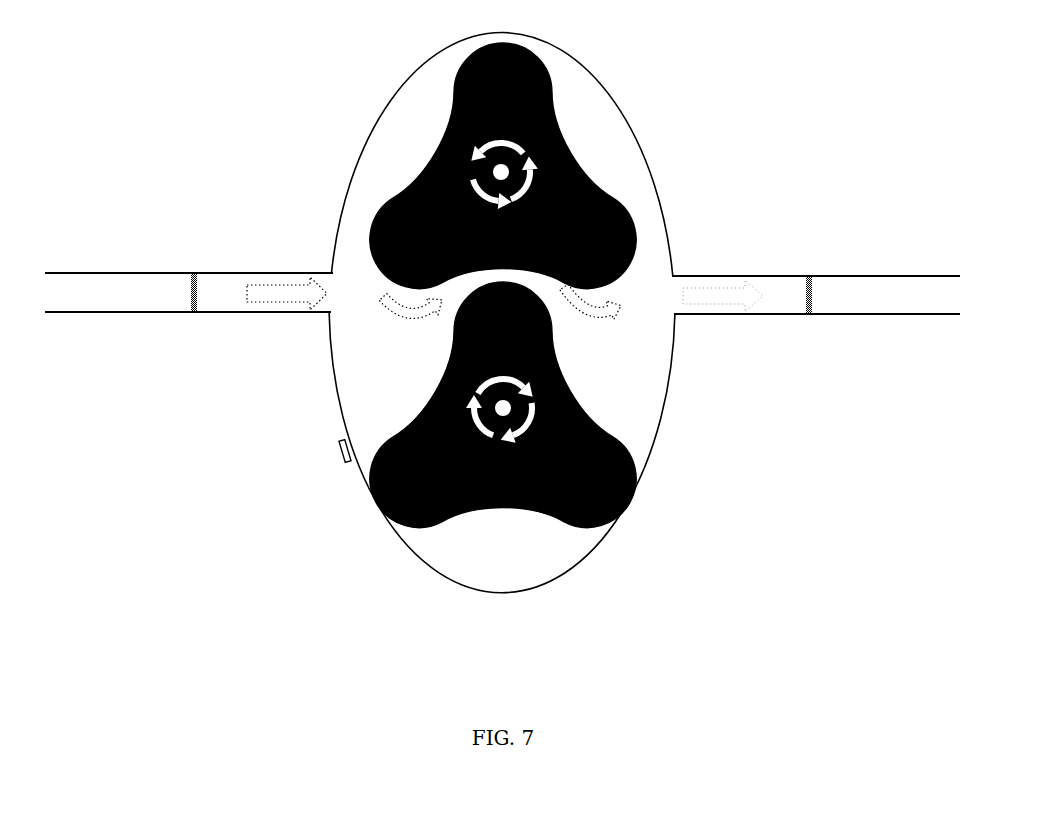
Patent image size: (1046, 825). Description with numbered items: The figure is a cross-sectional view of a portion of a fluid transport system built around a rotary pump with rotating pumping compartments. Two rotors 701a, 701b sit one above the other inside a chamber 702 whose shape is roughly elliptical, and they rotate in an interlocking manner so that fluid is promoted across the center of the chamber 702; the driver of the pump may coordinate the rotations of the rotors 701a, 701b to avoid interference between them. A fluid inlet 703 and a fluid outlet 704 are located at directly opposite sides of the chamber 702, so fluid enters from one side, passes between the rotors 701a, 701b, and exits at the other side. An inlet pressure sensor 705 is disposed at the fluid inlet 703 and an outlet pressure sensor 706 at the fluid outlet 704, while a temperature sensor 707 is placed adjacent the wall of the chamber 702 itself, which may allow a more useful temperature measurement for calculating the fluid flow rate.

The rotor 701a is at (603, 188).
The rotor 701b is at (637, 492).
The chamber 702 is at (350, 378).
The fluid inlet 703 is at (130, 283).
The fluid outlet 704 is at (855, 290).
The inlet pressure sensor 705 is at (192, 310).
The outlet pressure sensor 706 is at (808, 300).
The temperature sensor 707 is at (342, 460).